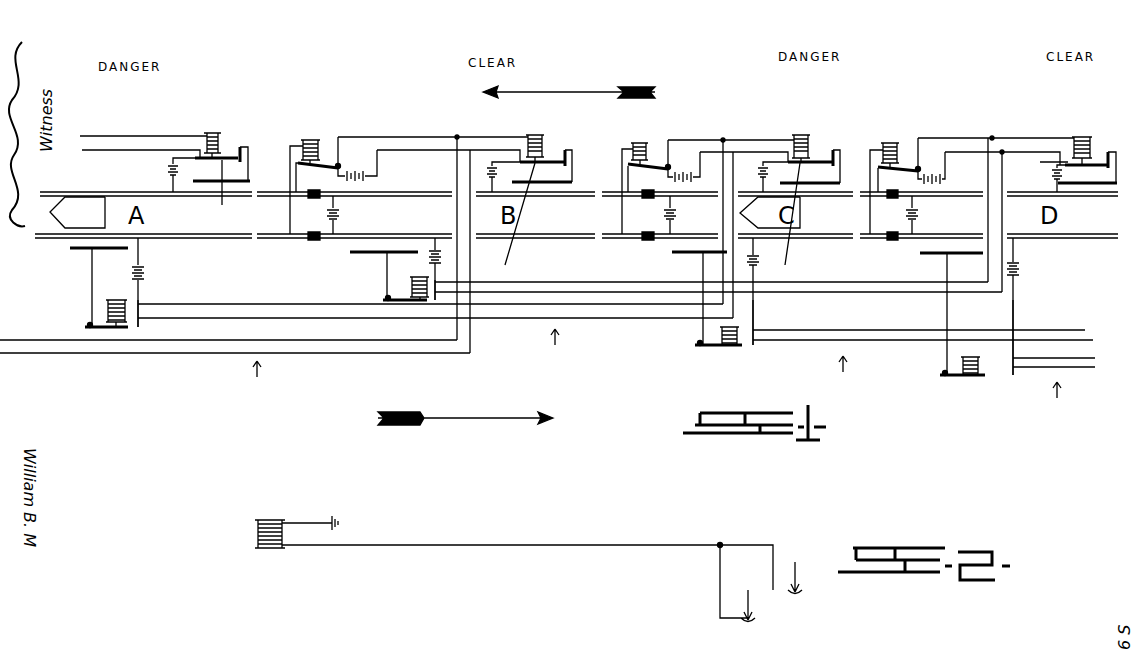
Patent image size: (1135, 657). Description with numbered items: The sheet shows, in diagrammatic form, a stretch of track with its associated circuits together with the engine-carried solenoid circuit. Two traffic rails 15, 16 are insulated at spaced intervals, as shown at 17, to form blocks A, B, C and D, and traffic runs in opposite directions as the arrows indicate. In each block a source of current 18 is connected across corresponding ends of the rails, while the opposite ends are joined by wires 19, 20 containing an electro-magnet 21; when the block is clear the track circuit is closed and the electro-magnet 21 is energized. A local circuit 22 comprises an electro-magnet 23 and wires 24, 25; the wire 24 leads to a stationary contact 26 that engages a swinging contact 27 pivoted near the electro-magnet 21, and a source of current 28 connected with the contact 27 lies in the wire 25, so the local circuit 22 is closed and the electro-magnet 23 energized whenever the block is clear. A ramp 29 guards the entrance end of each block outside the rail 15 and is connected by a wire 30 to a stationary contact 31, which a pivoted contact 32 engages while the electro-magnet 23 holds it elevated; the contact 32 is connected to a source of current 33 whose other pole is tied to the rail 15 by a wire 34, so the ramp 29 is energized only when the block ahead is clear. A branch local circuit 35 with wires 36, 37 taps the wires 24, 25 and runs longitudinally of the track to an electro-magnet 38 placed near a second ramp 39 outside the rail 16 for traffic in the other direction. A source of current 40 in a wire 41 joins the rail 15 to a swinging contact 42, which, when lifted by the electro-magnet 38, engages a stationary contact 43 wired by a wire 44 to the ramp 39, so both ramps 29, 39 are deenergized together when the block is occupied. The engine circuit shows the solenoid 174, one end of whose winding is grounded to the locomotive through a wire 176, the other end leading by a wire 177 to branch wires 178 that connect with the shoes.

In FIG. 1, the traffic rail 15 is at (80, 191).
In FIG. 1, the traffic rail 16 is at (36, 237).
In FIG. 1, the insulation 17 is at (313, 241).
In FIG. 1, the source of current 18 is at (339, 215).
In FIG. 1, the wire 19 is at (288, 193).
In FIG. 1, the wire 20 is at (290, 222).
In FIG. 1, the electro-magnet 21 is at (306, 140).
In FIG. 1, the local circuit 22 is at (420, 128).
In FIG. 1, the electro-magnet 23 is at (215, 133).
In FIG. 1, the wire 24 is at (97, 136).
In FIG. 1, the wire 25 is at (135, 150).
In FIG. 1, the stationary contact 26 is at (339, 163).
In FIG. 1, the swinging contact 27 is at (320, 164).
In FIG. 1, the source of current 28 is at (375, 185).
In FIG. 1, the ramp 29 is at (207, 185).
In FIG. 1, the wire 30 is at (244, 157).
In FIG. 1, the stationary contact 31 is at (243, 147).
In FIG. 1, the pivoted contact 32 is at (639, 216).
In FIG. 1, the source of current 33 is at (165, 168).
In FIG. 1, the wire 34 is at (170, 184).
In FIG. 1, the branch local circuit 35 is at (648, 369).
In FIG. 1, the wire 36 is at (351, 341).
In FIG. 1, the wire 37 is at (395, 354).
In FIG. 1, the electro-magnet 38 is at (113, 328).
In FIG. 1, the ramp 39 is at (72, 251).
In FIG. 1, the source of current 40 is at (146, 273).
In FIG. 1, the wire 41 is at (142, 290).
In FIG. 1, the swinging contact 42 is at (95, 330).
In FIG. 1, the stationary contact 43 is at (88, 323).
In FIG. 1, the wire 44 is at (90, 298).
In FIG. 2, the solenoid 174 is at (258, 539).
In FIG. 2, the wire 176 is at (314, 521).
In FIG. 2, the wire 177 is at (506, 535).
In FIG. 2, the branch wires 178 is at (773, 578).